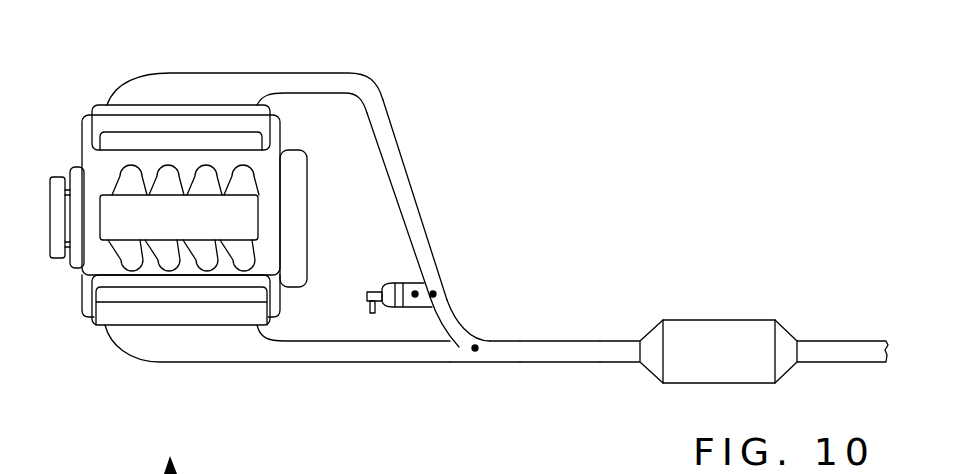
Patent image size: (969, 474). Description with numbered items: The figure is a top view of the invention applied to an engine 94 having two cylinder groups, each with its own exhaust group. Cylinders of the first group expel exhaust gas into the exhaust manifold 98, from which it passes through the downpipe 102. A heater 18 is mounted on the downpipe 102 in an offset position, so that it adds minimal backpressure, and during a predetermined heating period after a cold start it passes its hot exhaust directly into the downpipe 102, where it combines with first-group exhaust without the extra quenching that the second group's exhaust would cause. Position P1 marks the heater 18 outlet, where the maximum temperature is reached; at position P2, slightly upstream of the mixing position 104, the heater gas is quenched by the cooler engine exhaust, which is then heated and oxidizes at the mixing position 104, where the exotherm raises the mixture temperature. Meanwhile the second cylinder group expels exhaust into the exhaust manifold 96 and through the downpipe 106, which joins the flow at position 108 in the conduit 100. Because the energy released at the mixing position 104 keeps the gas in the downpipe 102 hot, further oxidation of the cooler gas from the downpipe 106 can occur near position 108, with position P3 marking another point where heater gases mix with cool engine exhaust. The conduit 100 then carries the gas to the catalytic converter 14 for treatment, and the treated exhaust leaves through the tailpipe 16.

The catalytic converter 14 is at (722, 345).
The tailpipe 16 is at (837, 355).
The heater 18 is at (388, 292).
The engine 94 is at (125, 210).
The exhaust manifold 96 is at (182, 345).
The exhaust manifold 98 is at (197, 88).
The conduit 100 is at (612, 353).
The downpipe 102 is at (383, 140).
The mixing position 104 is at (445, 318).
The downpipe 106 is at (435, 353).
The position 108 is at (570, 352).
The position P1 is at (415, 297).
The position P2 is at (436, 294).
The position P3 is at (477, 346).